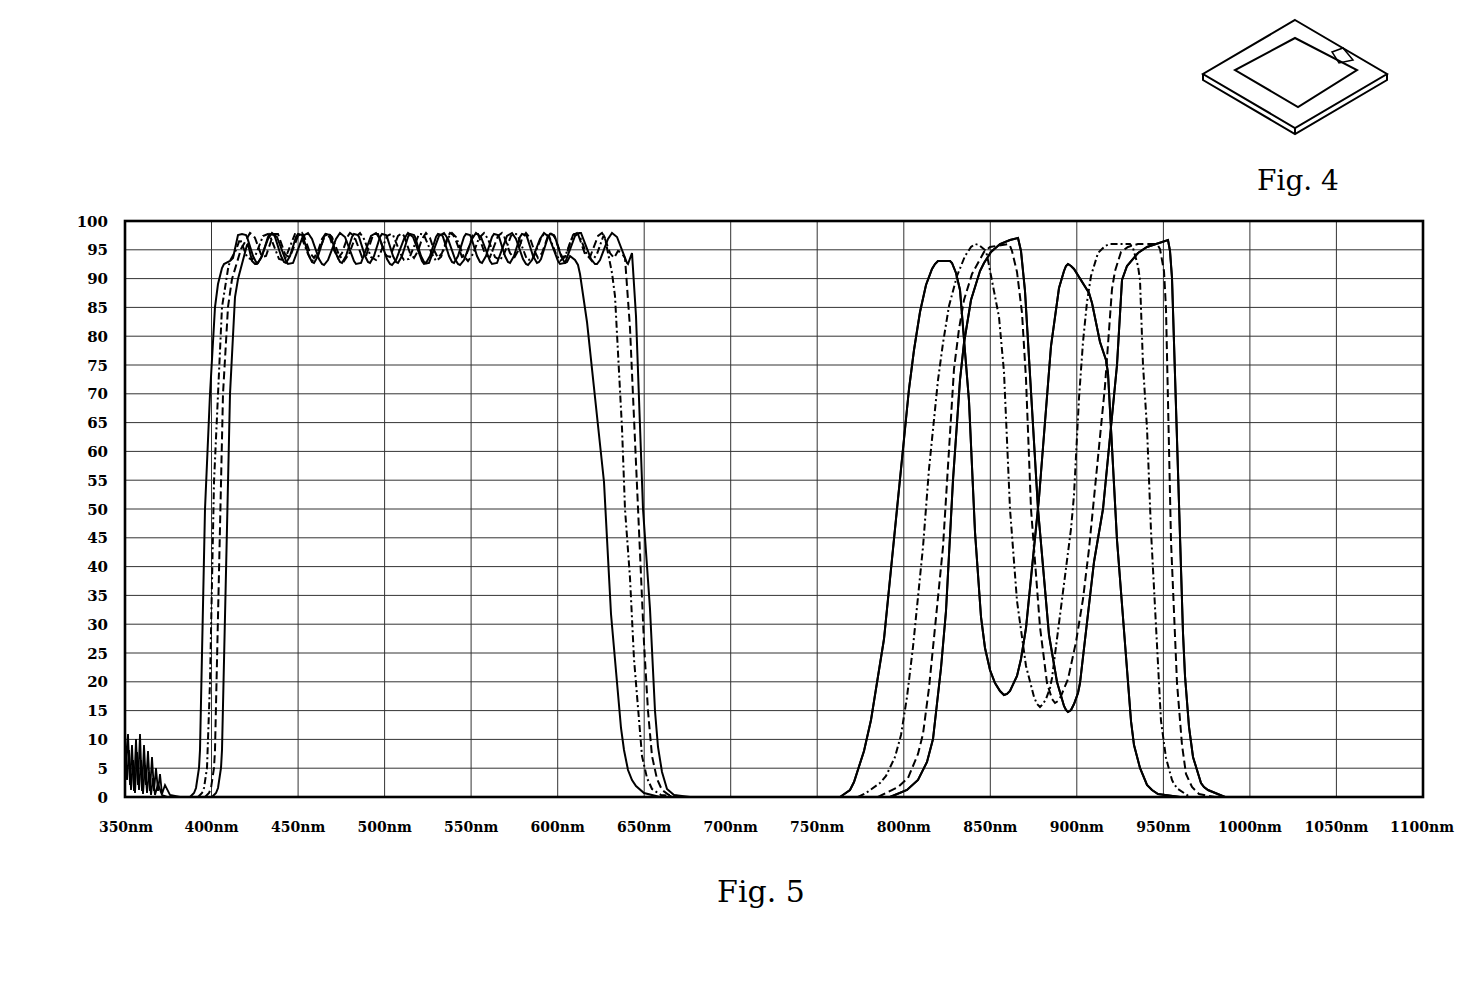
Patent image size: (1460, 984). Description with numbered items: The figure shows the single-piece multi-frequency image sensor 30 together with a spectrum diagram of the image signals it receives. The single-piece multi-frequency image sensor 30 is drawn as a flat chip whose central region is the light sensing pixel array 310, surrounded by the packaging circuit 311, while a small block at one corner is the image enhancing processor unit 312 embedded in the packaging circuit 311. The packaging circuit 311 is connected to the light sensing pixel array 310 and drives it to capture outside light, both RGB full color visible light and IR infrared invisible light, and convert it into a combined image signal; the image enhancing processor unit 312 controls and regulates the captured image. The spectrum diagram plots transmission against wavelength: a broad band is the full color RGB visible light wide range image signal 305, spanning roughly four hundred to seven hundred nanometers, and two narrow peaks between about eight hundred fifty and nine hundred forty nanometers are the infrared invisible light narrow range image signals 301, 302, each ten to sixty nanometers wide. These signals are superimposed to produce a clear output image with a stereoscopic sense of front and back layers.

In FIG. 4, the single-piece multi-frequency image sensor 30 is at (1366, 103).
In FIG. 4, the light sensing pixel array 310 is at (1283, 83).
In FIG. 4, the packaging circuit 311 is at (1225, 72).
In FIG. 4, the image enhancing processor unit 312 is at (1340, 55).
In FIG. 5, the full color RGB visible light wide range image signal 305 is at (470, 238).
In FIG. 5, the infrared invisible light narrow range image signal 301 is at (991, 248).
In FIG. 5, the infrared invisible light narrow range image signal 302 is at (1147, 248).